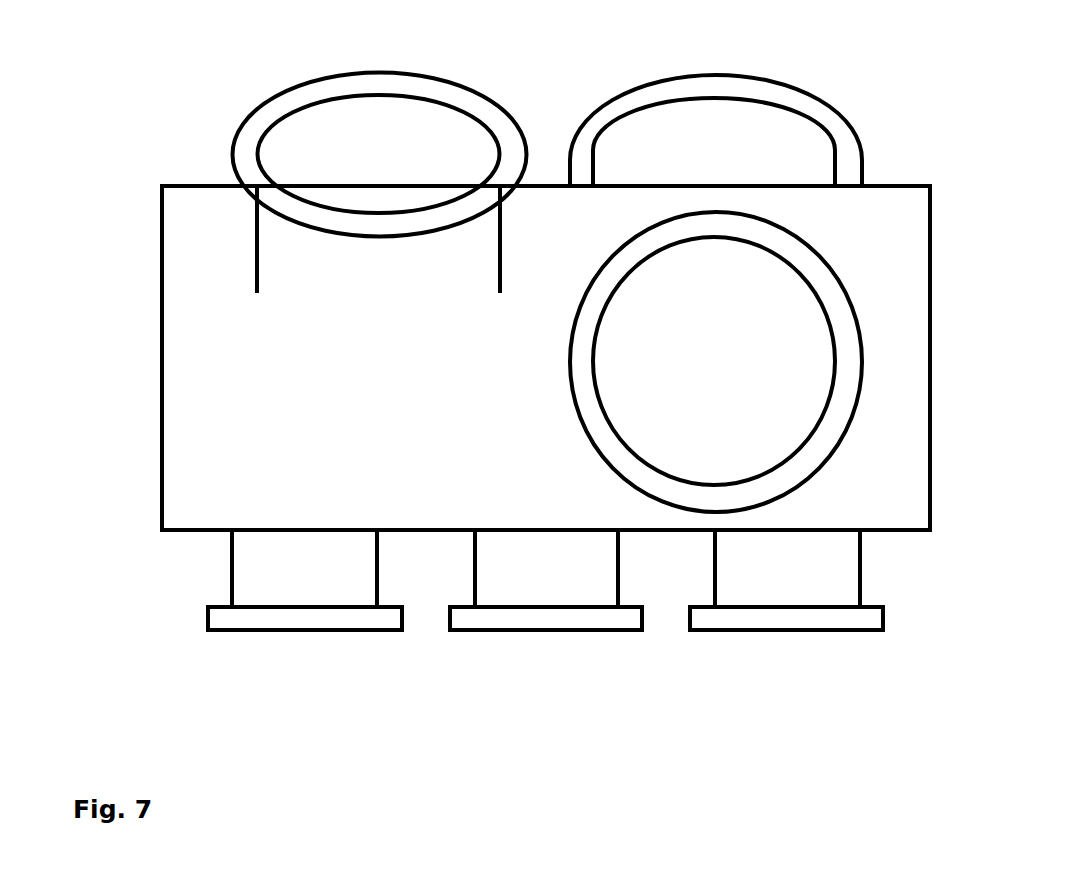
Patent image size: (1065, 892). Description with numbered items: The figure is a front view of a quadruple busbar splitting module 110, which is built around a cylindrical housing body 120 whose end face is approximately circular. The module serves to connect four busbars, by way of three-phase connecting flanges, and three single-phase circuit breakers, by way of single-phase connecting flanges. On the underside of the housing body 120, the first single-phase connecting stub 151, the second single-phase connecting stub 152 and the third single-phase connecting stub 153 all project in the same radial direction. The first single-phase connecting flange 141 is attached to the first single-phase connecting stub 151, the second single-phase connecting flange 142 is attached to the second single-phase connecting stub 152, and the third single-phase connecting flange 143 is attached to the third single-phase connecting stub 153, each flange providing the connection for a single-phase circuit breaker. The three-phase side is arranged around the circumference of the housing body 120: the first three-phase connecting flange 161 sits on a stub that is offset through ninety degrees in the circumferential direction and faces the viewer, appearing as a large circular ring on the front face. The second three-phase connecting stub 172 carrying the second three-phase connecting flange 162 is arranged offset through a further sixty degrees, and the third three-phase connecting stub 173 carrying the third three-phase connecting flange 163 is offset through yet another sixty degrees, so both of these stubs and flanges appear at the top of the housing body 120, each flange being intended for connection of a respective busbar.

The quadruple busbar splitting module 110 is at (103, 663).
The cylindrical housing body 120 is at (238, 383).
The first single-phase connecting flange 141 is at (775, 622).
The second single-phase connecting flange 142 is at (517, 620).
The third single-phase connecting flange 143 is at (283, 622).
The first single-phase connecting stub 151 is at (797, 580).
The second single-phase connecting stub 152 is at (593, 575).
The third single-phase connecting stub 153 is at (338, 580).
The first three-phase connecting flange 161 is at (845, 353).
The second three-phase connecting flange 162 is at (258, 122).
The third three-phase connecting flange 163 is at (813, 93).
The second three-phase connecting stub 172 is at (305, 262).
The third three-phase connecting stub 173 is at (758, 153).